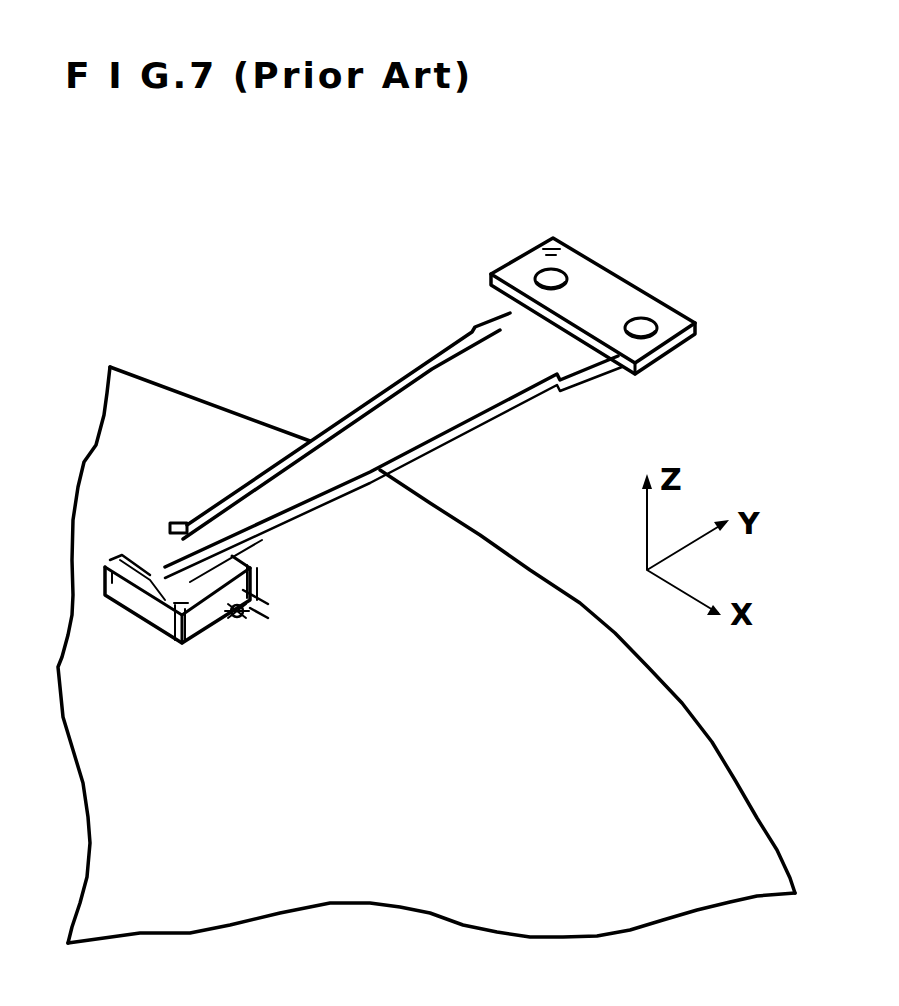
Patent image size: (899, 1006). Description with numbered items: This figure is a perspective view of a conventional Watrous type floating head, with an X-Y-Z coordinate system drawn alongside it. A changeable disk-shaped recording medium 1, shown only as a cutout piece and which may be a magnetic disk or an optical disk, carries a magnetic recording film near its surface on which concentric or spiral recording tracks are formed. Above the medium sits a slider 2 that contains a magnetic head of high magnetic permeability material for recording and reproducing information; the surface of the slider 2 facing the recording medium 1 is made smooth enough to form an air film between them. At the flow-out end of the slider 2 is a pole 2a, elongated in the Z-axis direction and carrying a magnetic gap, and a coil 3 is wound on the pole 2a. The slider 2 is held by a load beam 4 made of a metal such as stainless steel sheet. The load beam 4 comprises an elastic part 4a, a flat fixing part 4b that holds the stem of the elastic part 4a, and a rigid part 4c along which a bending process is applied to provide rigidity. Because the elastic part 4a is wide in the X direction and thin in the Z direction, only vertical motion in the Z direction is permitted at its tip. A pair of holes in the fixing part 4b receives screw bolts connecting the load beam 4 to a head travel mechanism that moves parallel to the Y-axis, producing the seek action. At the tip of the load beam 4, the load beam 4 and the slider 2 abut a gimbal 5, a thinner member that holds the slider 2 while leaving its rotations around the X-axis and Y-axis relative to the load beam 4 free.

The disk-shaped recording medium 1 is at (682, 722).
The slider 2 is at (167, 628).
The pole 2a is at (239, 613).
The coil 3 is at (246, 613).
The load beam 4 is at (430, 400).
The elastic part 4a is at (506, 322).
The fixing part 4b is at (617, 293).
The rigid part 4c is at (537, 390).
The gimbal 5 is at (110, 607).